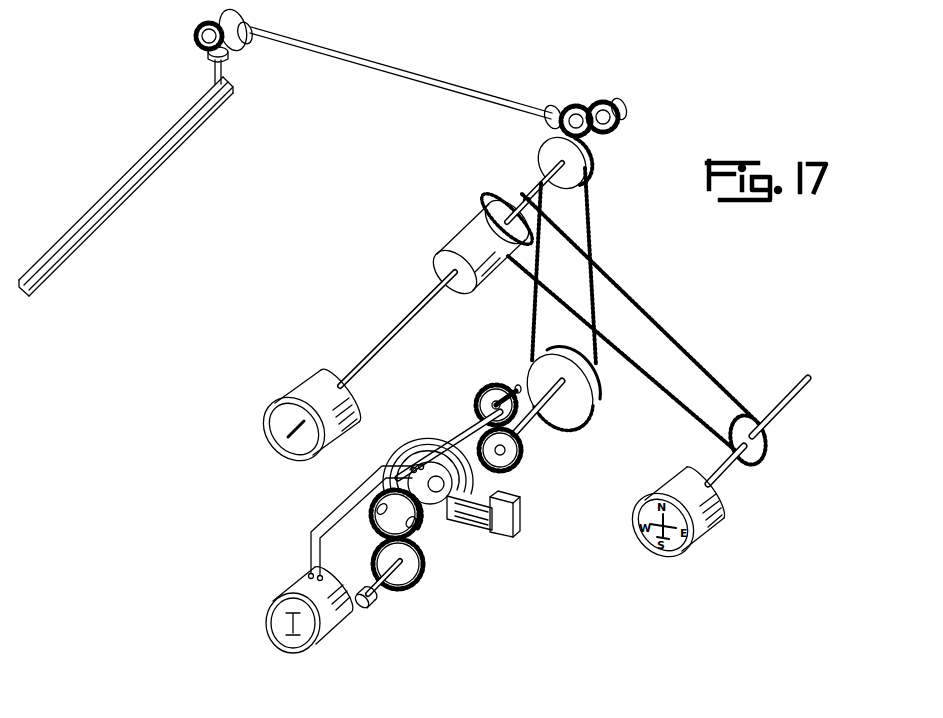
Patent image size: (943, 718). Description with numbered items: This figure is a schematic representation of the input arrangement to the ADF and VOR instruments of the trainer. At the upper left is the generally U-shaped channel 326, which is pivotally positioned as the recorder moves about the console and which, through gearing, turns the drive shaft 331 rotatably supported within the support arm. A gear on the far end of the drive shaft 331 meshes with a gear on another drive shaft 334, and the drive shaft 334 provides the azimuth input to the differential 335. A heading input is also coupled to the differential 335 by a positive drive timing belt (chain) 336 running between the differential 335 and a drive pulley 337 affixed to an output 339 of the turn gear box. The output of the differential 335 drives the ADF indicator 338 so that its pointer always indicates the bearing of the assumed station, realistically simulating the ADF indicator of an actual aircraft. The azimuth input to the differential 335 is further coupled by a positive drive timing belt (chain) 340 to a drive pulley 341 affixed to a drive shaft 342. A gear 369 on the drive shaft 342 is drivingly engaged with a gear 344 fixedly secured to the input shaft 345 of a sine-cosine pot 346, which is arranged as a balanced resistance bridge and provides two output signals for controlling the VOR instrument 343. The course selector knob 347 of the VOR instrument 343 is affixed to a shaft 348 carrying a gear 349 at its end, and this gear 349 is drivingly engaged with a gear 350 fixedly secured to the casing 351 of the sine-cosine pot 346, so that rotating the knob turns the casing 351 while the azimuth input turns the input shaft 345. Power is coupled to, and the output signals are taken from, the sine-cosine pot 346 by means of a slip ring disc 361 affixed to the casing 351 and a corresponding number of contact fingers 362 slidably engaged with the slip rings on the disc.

The U-shaped channel 326 is at (142, 184).
The drive shaft 331 is at (377, 63).
The drive shaft 334 is at (588, 142).
The differential 335 is at (458, 242).
The positive drive timing belt (chain) 336 is at (645, 315).
The drive pulley 337 is at (758, 453).
The ADF indicator 338 is at (306, 385).
The output of the turn gear box 339 is at (787, 382).
The positive drive timing belt (chain) 340 is at (592, 216).
The drive pulley 341 is at (582, 404).
The drive shaft 342 is at (537, 418).
The VOR instrument 343 is at (336, 614).
The gear 344 is at (490, 385).
The input shaft 345 is at (470, 430).
The sine-cosine pot 346 is at (434, 520).
The course selector knob 347 is at (378, 602).
The shaft 348 is at (383, 595).
The gear 349 is at (423, 588).
The gear 350 is at (383, 517).
The casing 351 is at (442, 482).
The slip ring disc 361 is at (418, 440).
The contact fingers 362 is at (516, 517).
The gear 369 is at (522, 462).